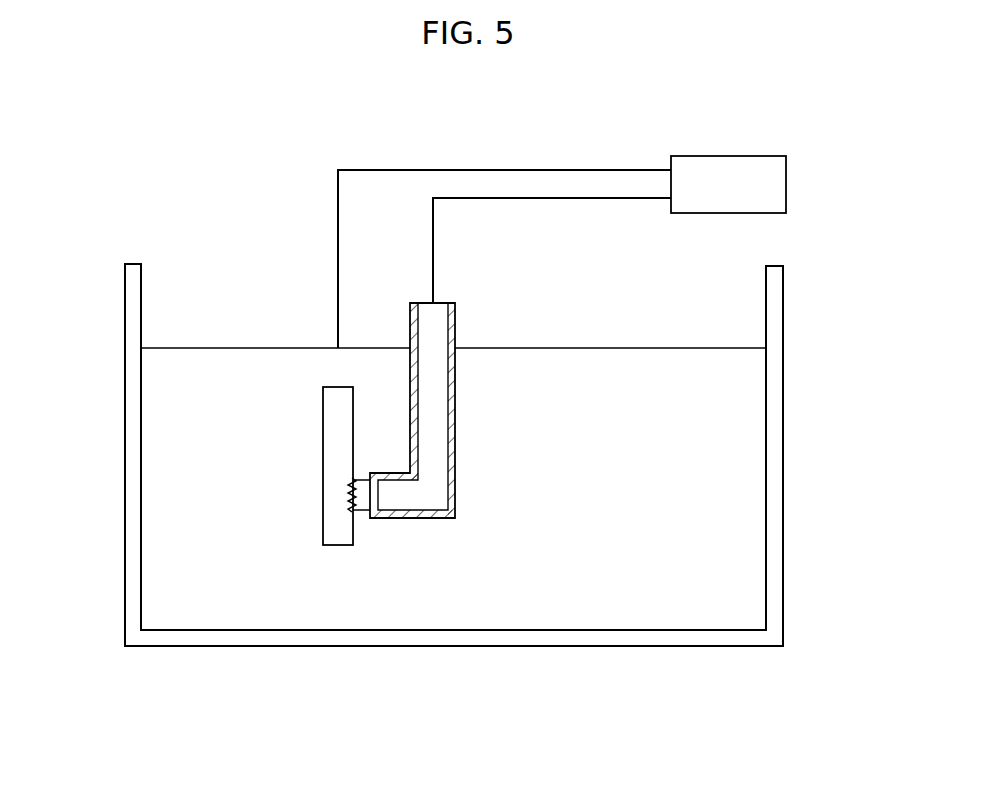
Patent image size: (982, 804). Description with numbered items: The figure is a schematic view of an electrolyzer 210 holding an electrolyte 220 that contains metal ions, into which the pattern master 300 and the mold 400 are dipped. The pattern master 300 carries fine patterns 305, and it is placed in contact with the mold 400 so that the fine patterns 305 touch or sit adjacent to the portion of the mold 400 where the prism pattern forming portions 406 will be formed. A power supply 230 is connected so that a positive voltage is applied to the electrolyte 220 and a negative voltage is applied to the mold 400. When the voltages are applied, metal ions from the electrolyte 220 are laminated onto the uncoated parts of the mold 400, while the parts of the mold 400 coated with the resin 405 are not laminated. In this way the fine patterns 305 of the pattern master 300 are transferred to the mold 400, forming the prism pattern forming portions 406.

The electrolyzer 210 is at (778, 453).
The electrolyte 220 is at (733, 498).
The power supply 230 is at (786, 185).
The pattern master 300 is at (331, 452).
The fine patterns 305 is at (350, 498).
The mold 400 is at (430, 368).
The resin 405 is at (458, 402).
The prism pattern forming portions 406 is at (366, 507).